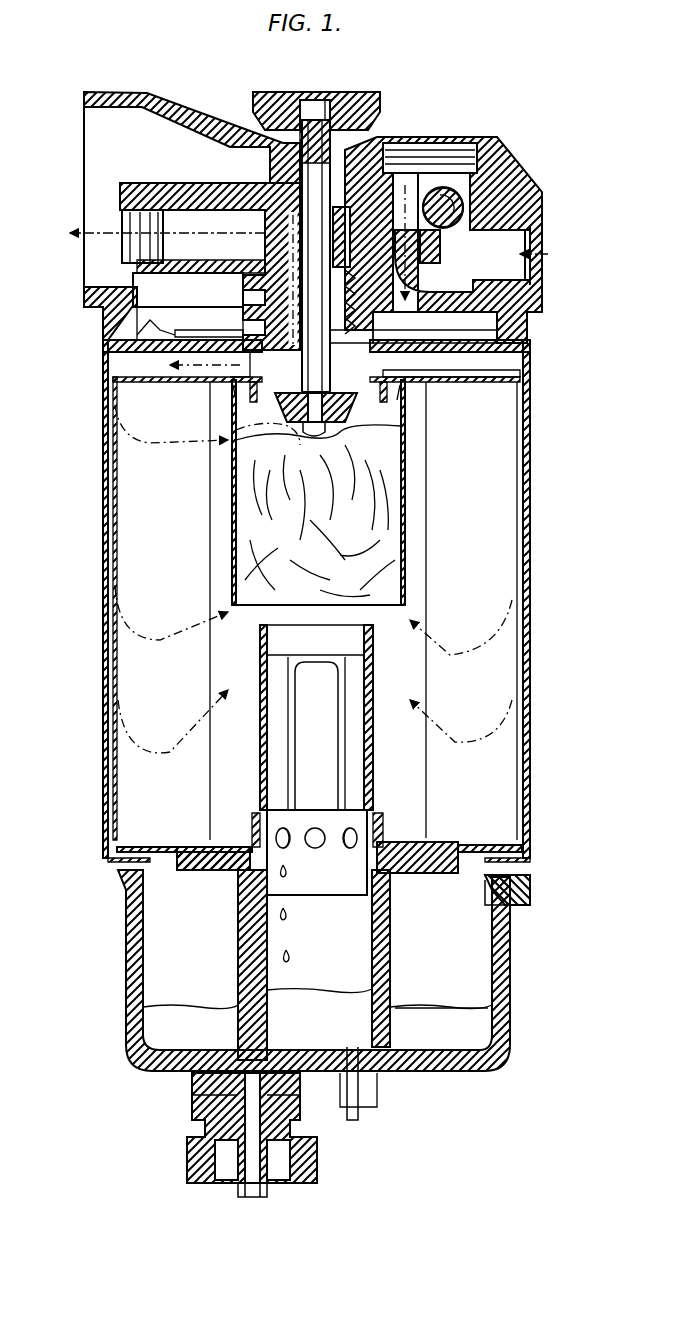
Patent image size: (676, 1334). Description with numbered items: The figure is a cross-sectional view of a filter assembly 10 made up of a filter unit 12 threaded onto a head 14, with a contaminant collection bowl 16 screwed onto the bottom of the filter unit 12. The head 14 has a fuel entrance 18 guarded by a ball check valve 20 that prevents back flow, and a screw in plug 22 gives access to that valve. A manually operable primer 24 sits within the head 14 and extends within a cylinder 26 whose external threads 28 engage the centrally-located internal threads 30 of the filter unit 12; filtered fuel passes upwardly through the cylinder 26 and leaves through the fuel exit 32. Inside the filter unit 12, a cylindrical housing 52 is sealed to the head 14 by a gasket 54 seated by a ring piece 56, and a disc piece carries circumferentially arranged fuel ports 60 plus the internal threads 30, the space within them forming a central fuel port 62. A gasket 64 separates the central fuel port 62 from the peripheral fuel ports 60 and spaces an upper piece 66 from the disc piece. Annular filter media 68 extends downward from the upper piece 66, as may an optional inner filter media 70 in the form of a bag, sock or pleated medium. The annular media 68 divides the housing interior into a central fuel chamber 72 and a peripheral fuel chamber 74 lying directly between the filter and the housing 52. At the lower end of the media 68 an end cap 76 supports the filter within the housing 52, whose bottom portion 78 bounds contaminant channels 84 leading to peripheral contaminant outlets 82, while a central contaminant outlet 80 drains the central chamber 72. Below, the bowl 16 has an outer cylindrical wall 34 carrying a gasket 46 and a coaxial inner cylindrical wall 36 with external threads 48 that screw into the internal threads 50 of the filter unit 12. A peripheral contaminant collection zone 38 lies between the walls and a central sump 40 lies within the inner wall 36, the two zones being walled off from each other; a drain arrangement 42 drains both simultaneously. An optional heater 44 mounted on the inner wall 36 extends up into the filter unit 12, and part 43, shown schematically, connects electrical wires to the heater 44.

The filter assembly 10 is at (486, 84).
The filter unit 12 is at (531, 490).
The head 14 is at (460, 200).
The contaminant collection bowl 16 is at (508, 960).
The fuel entrance 18 is at (542, 237).
The ball check valve 20 is at (490, 145).
The screw in plug 22 is at (412, 141).
The manually operable primer 24 is at (352, 92).
The cylinder 26 is at (395, 282).
The external threads 28 is at (392, 338).
The internal threads 30 is at (333, 414).
The fuel exit 32 is at (125, 235).
The outer cylindrical wall 34 is at (511, 999).
The inner cylindrical wall 36 is at (393, 959).
The peripheral contaminant collection zone 38 is at (456, 997).
The central contaminant collection zone 40 is at (352, 972).
The drain arrangement 42 is at (190, 1133).
The part 43 is at (380, 1085).
The heater 44 is at (368, 790).
The gasket 46 is at (531, 886).
The external threads 48 is at (393, 912).
The internal threads 50 is at (372, 911).
The cylindrical housing 52 is at (531, 562).
The gasket 54 is at (105, 321).
The ring piece 56 is at (150, 330).
The fuel ports 60 is at (192, 360).
The central fuel port 62 is at (232, 417).
The gasket 64 is at (205, 372).
The upper piece 66 is at (524, 360).
The annular filter media 68 is at (524, 442).
The inner filter media 70 is at (248, 536).
The central fuel chamber 72 is at (247, 651).
The peripheral fuel chamber 74 is at (118, 673).
The end cap 76 is at (182, 846).
The bottom portion 78 is at (500, 903).
The central contaminant outlet 80 is at (268, 812).
The peripheral contaminant outlets 82 is at (162, 871).
The contaminant channels 84 is at (118, 859).